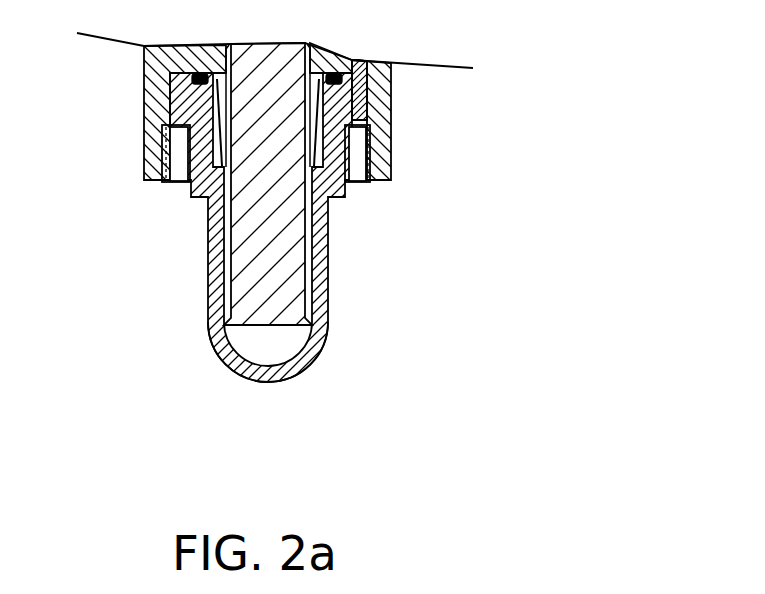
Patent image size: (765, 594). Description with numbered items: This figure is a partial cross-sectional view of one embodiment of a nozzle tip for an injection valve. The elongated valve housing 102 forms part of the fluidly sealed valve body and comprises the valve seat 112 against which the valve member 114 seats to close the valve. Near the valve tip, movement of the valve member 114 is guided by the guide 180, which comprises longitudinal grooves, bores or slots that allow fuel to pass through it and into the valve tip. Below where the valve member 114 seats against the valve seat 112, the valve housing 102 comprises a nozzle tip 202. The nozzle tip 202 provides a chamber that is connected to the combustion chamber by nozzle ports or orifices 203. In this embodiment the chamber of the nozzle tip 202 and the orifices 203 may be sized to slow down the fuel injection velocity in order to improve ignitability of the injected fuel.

The valve housing 102 is at (373, 68).
The valve member 114 is at (293, 108).
The guide 180 is at (403, 189).
The valve seat 112 is at (369, 384).
The nozzle tip 202 is at (277, 383).
The nozzle ports or orifices 203 is at (178, 395).